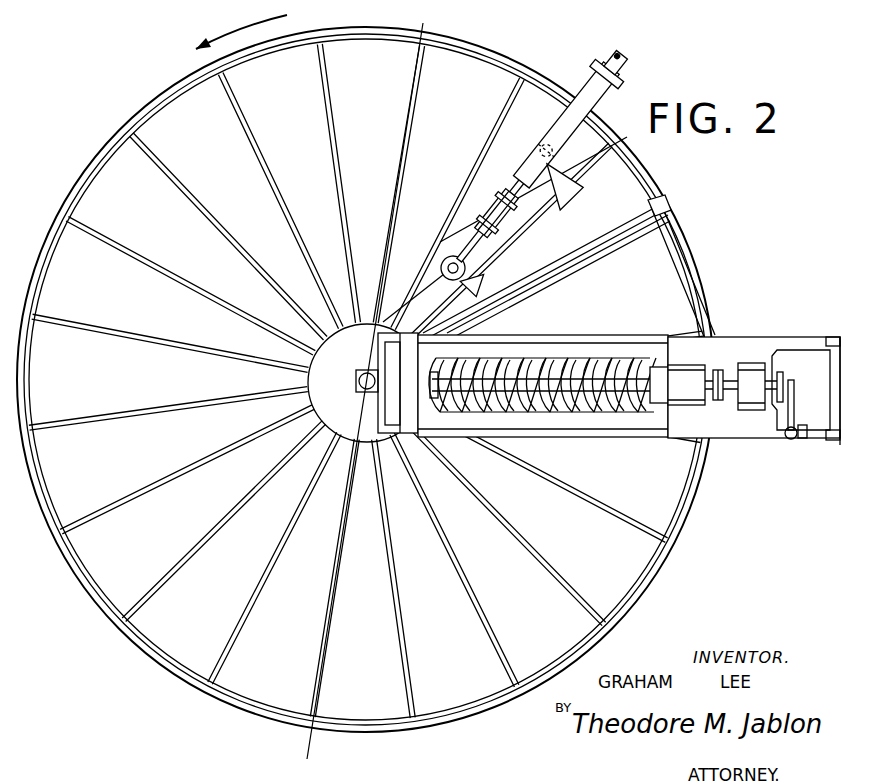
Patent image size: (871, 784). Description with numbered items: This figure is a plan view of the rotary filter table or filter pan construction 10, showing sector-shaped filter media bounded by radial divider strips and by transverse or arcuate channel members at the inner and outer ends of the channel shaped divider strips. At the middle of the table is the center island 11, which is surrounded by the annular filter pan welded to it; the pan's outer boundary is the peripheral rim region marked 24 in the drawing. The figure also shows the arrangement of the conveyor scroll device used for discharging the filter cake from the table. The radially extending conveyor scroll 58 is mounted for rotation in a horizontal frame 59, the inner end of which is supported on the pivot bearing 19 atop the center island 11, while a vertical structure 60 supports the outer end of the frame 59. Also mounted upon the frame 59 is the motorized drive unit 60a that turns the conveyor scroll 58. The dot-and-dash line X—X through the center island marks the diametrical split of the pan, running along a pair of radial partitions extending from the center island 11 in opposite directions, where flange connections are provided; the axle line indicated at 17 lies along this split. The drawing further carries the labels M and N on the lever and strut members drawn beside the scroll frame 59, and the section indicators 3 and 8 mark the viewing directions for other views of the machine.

The rotary filter table or filter pan construction 10 is at (117, 112).
The rim 24 is at (70, 196).
The center island 11 is at (351, 361).
The pivot bearing 19 is at (356, 381).
The axle / section line 17 is at (298, 748).
The conveyor scroll 58 is at (575, 357).
The horizontal frame 59 is at (612, 343).
The vertical structure 60 is at (690, 383).
The motorized drive unit 60a is at (752, 367).
The lever arm M is at (548, 142).
The strut N is at (622, 224).
The view indicator 3 is at (402, 263).
The view indicator 8 is at (50, 597).